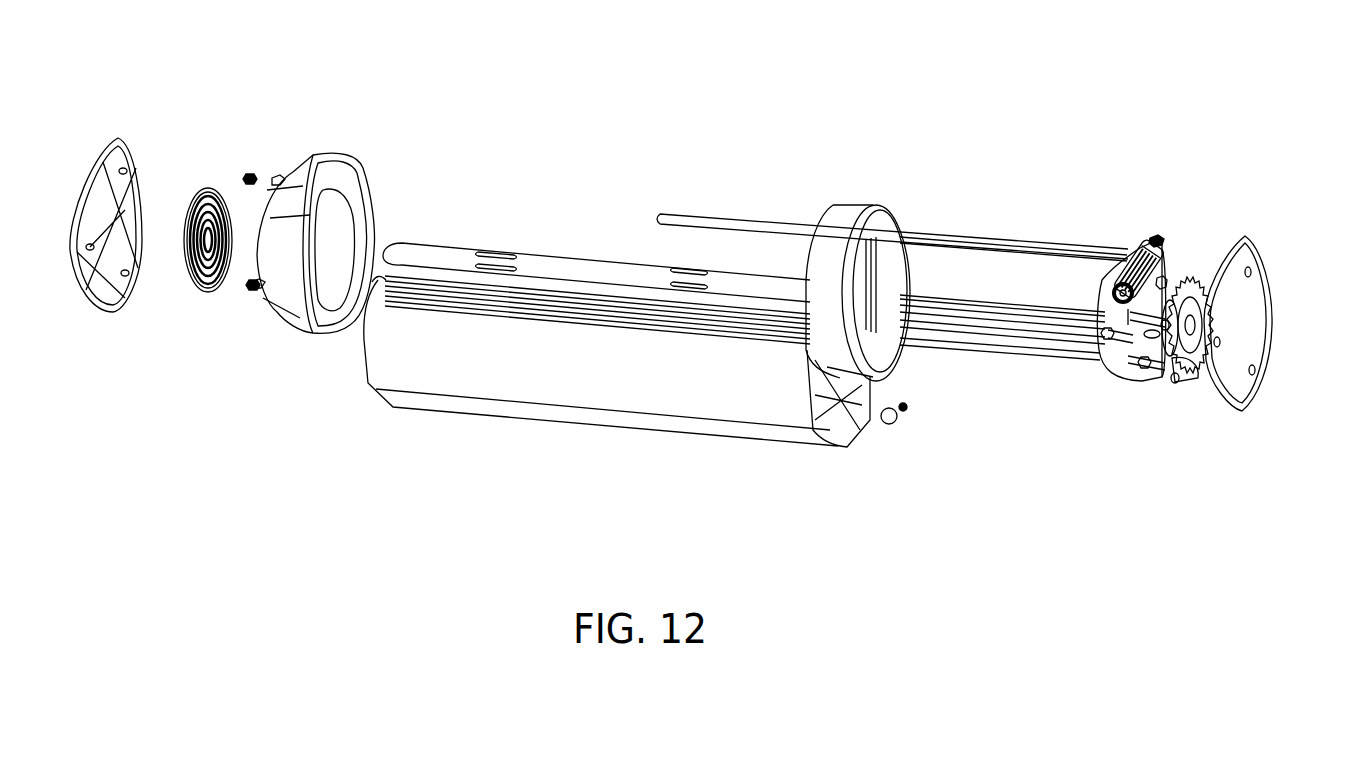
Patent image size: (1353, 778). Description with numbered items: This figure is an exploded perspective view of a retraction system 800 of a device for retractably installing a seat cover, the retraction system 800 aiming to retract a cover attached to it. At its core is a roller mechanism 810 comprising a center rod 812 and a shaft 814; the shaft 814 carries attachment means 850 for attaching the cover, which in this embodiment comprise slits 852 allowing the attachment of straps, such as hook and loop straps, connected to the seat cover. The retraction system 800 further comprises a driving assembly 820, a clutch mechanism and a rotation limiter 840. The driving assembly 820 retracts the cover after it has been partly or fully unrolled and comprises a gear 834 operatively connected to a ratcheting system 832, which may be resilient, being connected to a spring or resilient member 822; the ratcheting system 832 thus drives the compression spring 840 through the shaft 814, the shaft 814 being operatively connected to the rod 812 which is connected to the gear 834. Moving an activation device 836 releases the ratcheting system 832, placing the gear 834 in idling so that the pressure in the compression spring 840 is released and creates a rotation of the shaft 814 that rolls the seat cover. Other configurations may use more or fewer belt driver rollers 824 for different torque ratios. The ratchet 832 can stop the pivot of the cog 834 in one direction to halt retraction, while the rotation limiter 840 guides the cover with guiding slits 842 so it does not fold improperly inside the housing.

The retraction system 800 is at (613, 130).
The roller mechanism 810 is at (433, 238).
The center rod 812 is at (945, 300).
The shaft 814 is at (540, 262).
The driving assembly 820 is at (1189, 195).
The spring or resilient member 822 is at (1123, 250).
The belt driver rollers 824 is at (1173, 377).
The ratcheting system 832 is at (1155, 237).
The gear 834 is at (1192, 300).
The activation device 836 is at (1133, 282).
The rotation limiter 840 is at (213, 193).
The guiding slits 842 is at (208, 292).
The attachment means 850 is at (693, 272).
The slits 852 is at (705, 275).